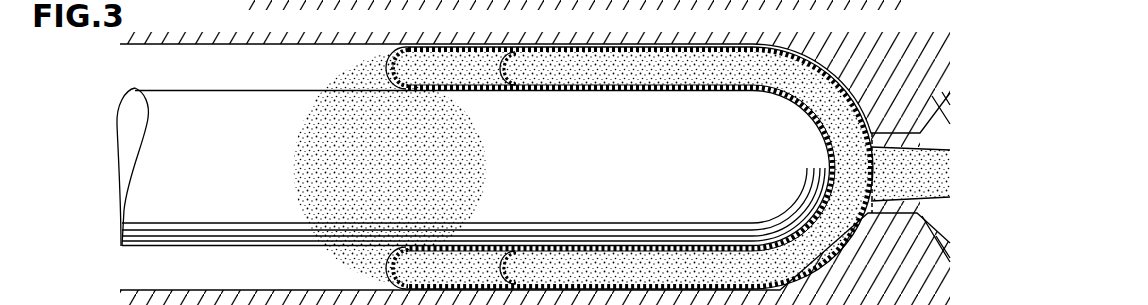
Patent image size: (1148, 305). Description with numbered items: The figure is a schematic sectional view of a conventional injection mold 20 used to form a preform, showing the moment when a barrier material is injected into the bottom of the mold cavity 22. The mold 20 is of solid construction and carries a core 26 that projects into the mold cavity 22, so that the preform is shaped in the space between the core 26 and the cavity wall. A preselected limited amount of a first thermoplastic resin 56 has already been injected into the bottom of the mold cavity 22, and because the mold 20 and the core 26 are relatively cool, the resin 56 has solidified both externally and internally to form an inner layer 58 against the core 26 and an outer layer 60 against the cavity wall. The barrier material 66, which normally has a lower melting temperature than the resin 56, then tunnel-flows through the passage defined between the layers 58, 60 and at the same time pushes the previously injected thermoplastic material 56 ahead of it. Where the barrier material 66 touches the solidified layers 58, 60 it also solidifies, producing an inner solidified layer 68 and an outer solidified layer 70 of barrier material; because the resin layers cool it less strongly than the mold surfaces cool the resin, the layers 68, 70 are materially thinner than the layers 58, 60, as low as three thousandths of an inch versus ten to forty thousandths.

The injection mold 20 is at (153, 50).
The mold cavity 22 is at (262, 72).
The core 26 is at (320, 210).
The first thermoplastic resin 56 is at (475, 78).
The inner layer of first thermoplastic resin 58 is at (713, 96).
The barrier material 66 is at (652, 76).
The inner solidified layer of barrier material 68 is at (757, 88).
The outer layer of first thermoplastic resin 60 is at (796, 60).
The outer solidified layer of barrier material 70 is at (816, 64).